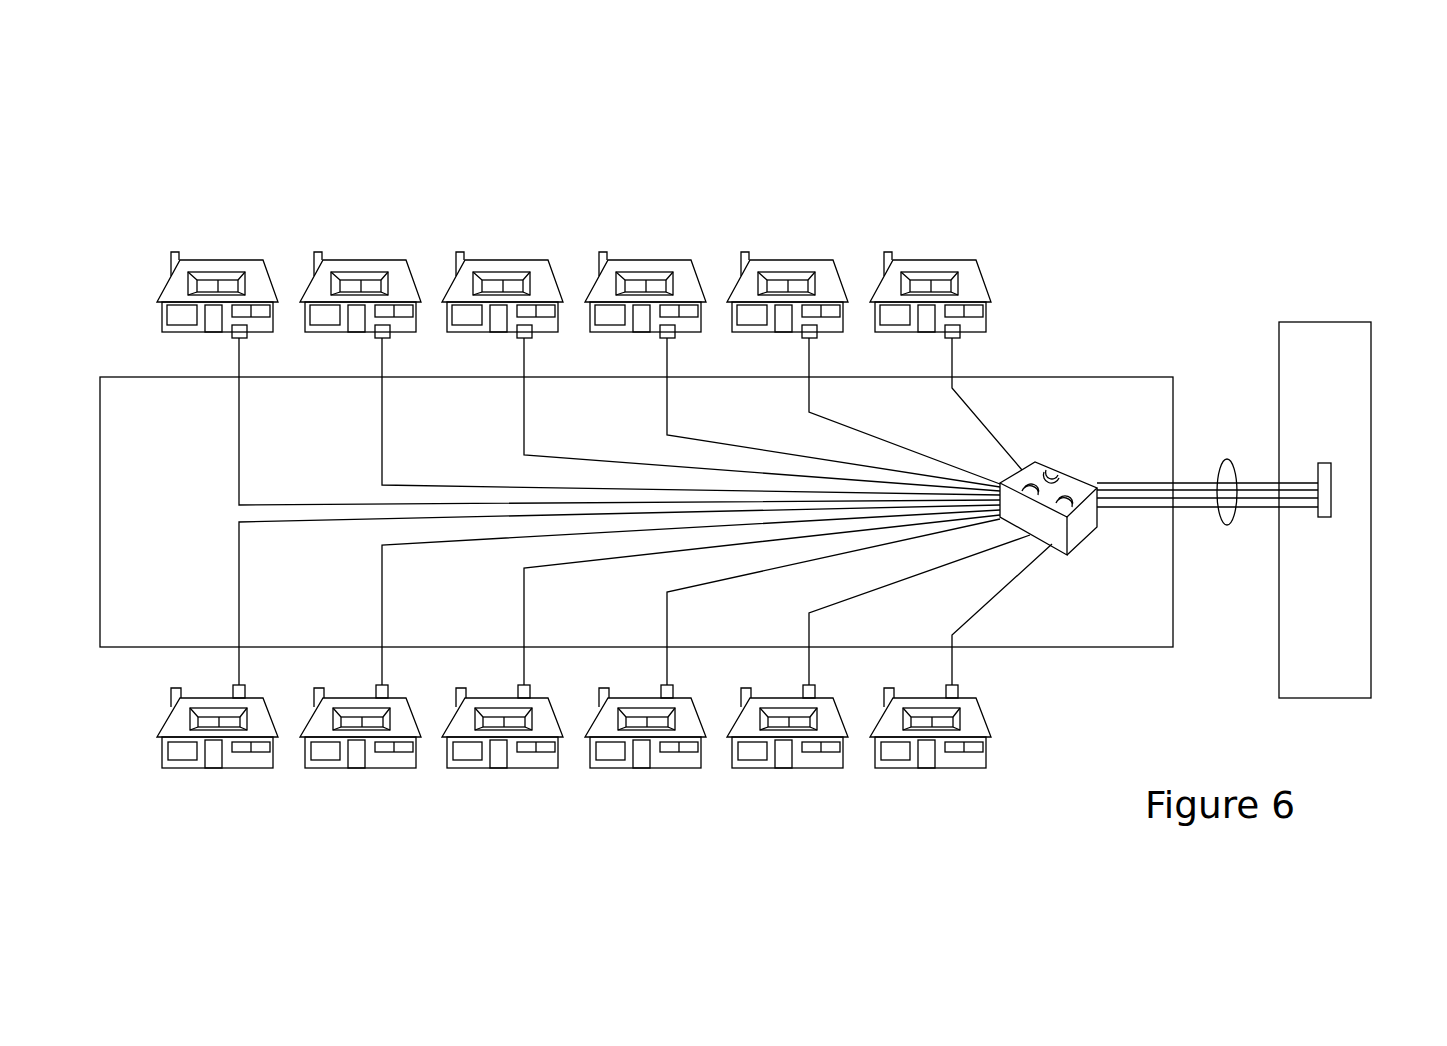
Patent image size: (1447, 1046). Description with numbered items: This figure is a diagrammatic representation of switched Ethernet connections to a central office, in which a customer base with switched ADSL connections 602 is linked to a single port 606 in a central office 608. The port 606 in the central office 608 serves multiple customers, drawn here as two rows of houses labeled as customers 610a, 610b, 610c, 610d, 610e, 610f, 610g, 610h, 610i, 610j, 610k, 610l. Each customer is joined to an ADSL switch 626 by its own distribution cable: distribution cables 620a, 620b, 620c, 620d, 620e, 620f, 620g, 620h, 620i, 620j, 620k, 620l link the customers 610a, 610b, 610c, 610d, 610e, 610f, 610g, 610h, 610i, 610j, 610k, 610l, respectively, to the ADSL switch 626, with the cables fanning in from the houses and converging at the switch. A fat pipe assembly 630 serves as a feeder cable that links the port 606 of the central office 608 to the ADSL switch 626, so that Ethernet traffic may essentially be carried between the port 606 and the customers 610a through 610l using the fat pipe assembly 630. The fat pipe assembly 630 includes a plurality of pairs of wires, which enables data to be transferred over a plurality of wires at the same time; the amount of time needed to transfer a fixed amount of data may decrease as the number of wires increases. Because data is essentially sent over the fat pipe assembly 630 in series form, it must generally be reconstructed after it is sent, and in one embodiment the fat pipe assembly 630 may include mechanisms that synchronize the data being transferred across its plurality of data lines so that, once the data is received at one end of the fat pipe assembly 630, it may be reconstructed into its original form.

The customer base with switched ADSL connections 602 is at (261, 145).
The port 606 is at (1333, 494).
The central office 608 is at (1378, 300).
The customer 610a is at (218, 258).
The customer 610b is at (361, 258).
The customer 610c is at (503, 258).
The customer 610d is at (646, 258).
The customer 610e is at (788, 258).
The customer 610f is at (931, 258).
The customer 610g is at (928, 768).
The customer 610h is at (785, 768).
The customer 610i is at (643, 768).
The customer 610j is at (500, 768).
The customer 610k is at (358, 768).
The customer 610l is at (215, 768).
The distribution cable 620a is at (242, 363).
The distribution cable 620b is at (385, 363).
The distribution cable 620c is at (527, 363).
The distribution cable 620d is at (670, 363).
The distribution cable 620e is at (812, 363).
The distribution cable 620f is at (955, 363).
The distribution cable 620g is at (955, 658).
The distribution cable 620h is at (812, 658).
The distribution cable 620i is at (670, 658).
The distribution cable 620j is at (527, 658).
The distribution cable 620k is at (385, 658).
The distribution cable 620l is at (242, 658).
The ADSL switch 626 is at (1073, 478).
The fat pipe assembly 630 is at (1234, 523).